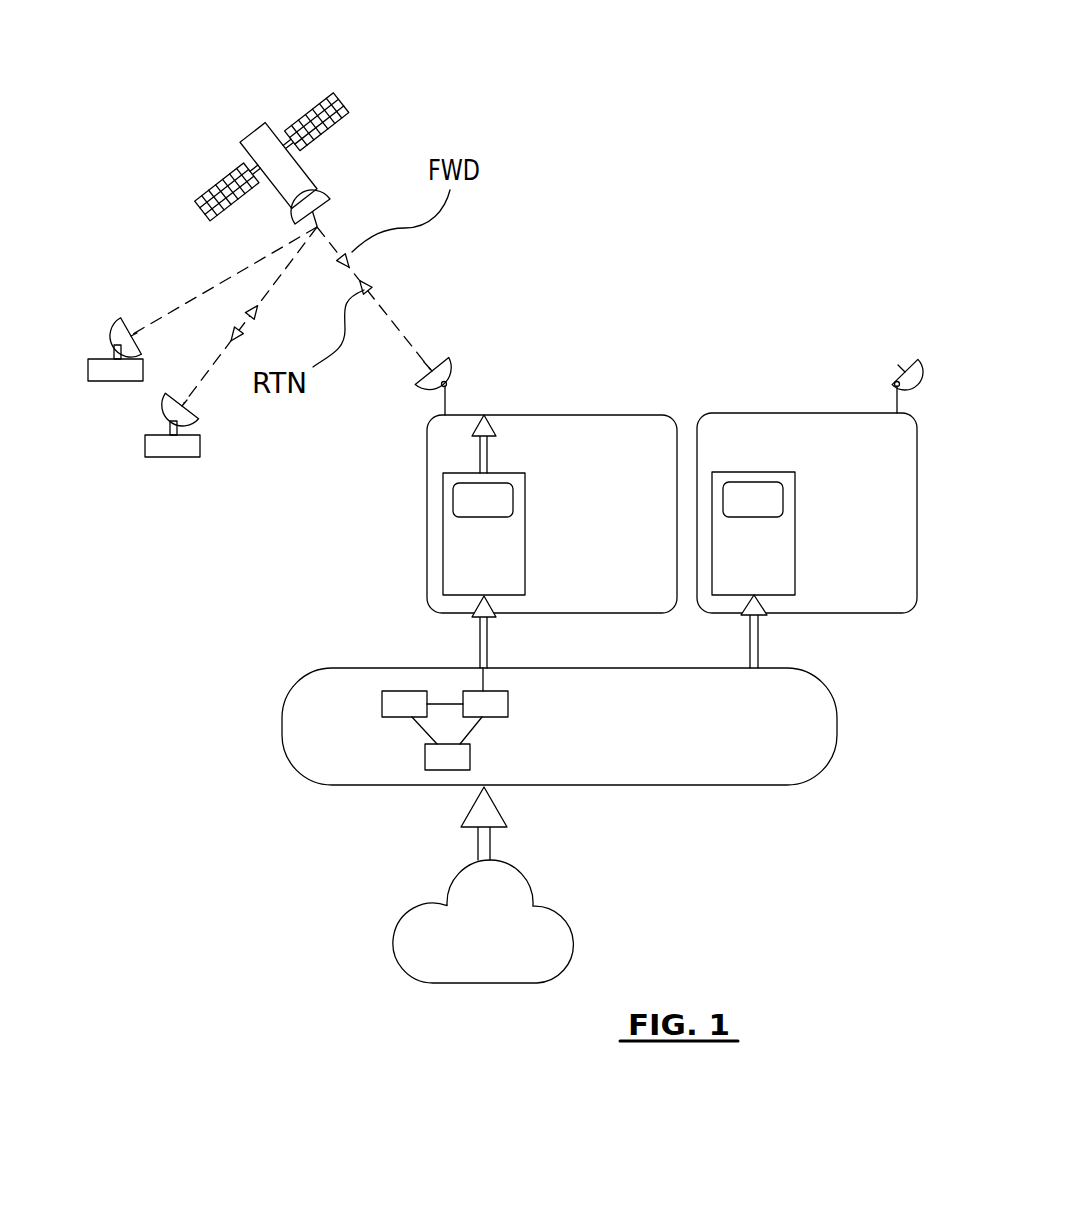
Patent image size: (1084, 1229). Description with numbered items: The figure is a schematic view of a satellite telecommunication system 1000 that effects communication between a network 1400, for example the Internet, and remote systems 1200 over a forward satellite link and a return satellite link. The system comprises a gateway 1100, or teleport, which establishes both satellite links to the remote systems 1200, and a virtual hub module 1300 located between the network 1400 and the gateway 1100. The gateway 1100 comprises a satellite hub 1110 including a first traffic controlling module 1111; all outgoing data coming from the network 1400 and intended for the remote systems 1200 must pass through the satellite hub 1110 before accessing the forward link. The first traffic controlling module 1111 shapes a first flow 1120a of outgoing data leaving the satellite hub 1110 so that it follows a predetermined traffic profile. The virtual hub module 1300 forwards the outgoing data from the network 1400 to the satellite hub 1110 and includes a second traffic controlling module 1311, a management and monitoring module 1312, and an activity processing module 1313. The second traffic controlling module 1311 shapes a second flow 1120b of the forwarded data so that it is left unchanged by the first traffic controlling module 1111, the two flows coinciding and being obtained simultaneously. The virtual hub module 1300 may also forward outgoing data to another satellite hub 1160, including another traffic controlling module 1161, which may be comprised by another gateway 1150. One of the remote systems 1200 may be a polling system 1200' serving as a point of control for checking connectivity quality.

The satellite telecommunication system 1000 is at (612, 138).
The gateway 1100 is at (580, 413).
The satellite hub 1110 is at (523, 533).
The first traffic controlling module 1111 is at (467, 502).
The first flow 1120a is at (480, 457).
The second flow 1120b is at (482, 643).
The another gateway 1150 is at (795, 416).
The another satellite hub 1160 is at (787, 555).
The another traffic controlling module 1161 is at (743, 492).
The remote systems 1200 is at (189, 495).
The polling system 1200' is at (108, 429).
The virtual hub module 1300 is at (293, 732).
The second traffic controlling module 1311 is at (500, 702).
The management and monitoring module 1312 is at (393, 702).
The activity processing module 1313 is at (463, 755).
The network 1400 is at (460, 970).